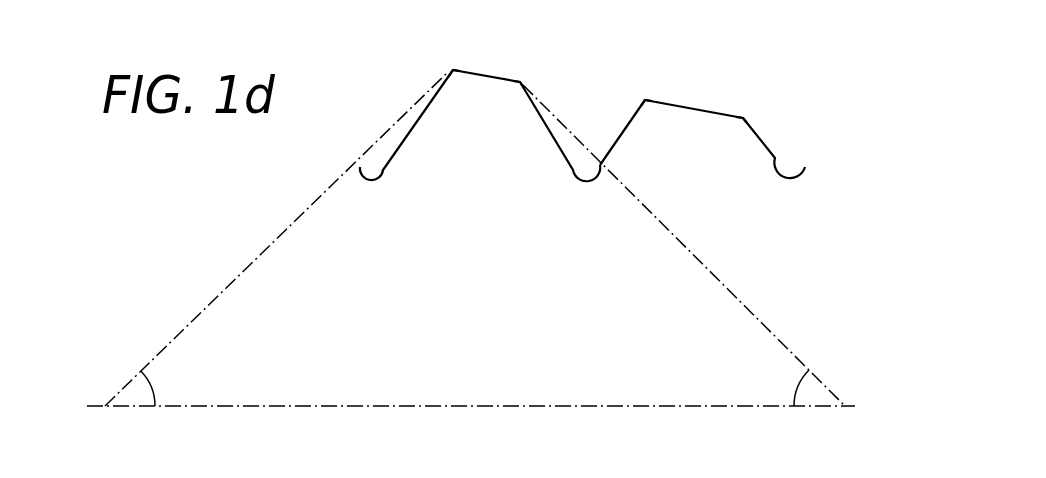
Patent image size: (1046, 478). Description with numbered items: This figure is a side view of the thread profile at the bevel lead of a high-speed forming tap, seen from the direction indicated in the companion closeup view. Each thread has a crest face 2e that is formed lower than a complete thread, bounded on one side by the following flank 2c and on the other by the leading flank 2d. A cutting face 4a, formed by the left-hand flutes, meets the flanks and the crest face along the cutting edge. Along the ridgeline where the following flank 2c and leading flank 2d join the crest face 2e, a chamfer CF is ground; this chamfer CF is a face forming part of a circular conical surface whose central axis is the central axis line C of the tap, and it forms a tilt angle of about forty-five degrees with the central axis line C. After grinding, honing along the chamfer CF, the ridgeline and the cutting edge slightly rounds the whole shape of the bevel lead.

The following flank 2c is at (405, 142).
The leading flank 2d is at (553, 126).
The crest face 2e is at (488, 76).
The cutting face 4a is at (576, 131).
The chamfer CF is at (452, 70).
The central axis line C is at (474, 406).